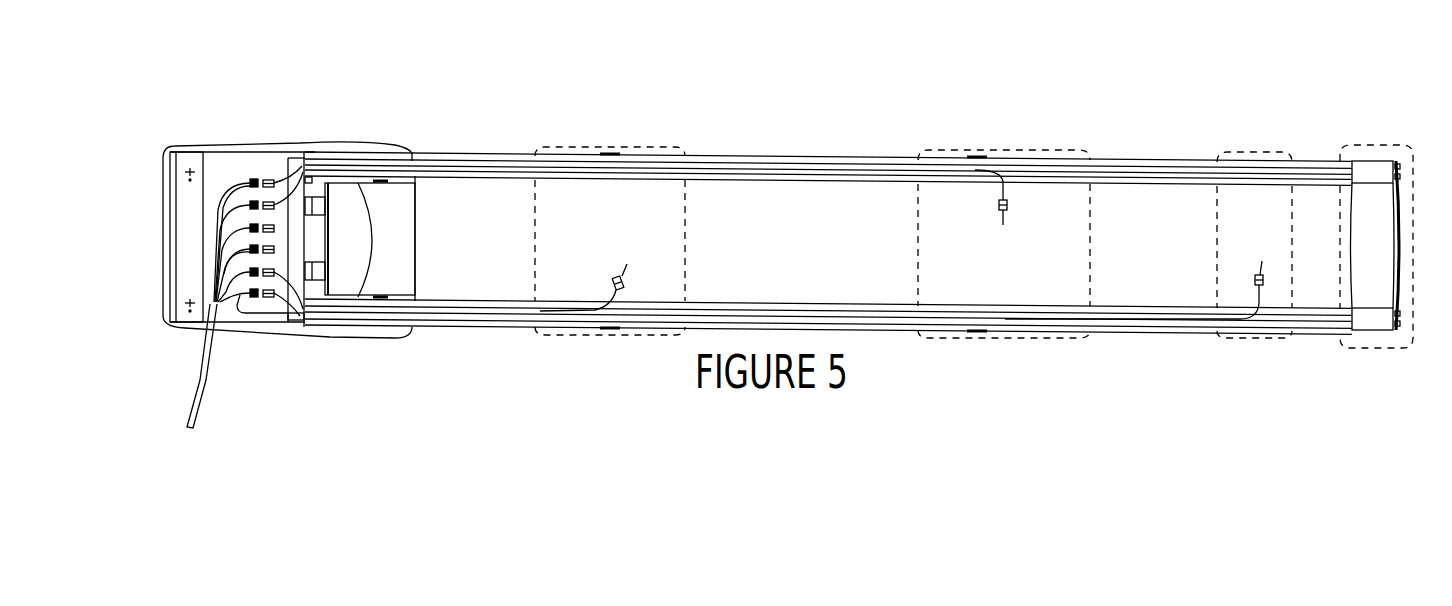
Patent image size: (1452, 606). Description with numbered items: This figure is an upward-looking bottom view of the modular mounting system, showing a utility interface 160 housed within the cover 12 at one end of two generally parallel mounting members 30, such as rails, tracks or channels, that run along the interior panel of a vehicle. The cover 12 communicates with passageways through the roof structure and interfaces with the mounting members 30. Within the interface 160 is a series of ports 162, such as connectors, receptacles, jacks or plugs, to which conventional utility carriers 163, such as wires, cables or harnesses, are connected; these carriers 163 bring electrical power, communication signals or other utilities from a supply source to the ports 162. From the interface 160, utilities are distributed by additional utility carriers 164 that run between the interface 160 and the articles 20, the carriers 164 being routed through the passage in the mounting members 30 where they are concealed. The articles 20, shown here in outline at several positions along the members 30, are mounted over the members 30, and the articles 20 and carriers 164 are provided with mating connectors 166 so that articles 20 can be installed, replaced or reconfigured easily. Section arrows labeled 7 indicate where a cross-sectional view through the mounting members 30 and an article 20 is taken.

The cover 12 is at (378, 143).
The mounting members 30 is at (487, 329).
The articles 20 is at (617, 141).
The utility interface 160 is at (254, 78).
The ports 162 is at (262, 181).
The utility carriers 164 is at (251, 183).
The utility carriers 163 is at (193, 383).
The mating connectors 166 is at (617, 276).
The section line 7- 7 is at (1057, 297).